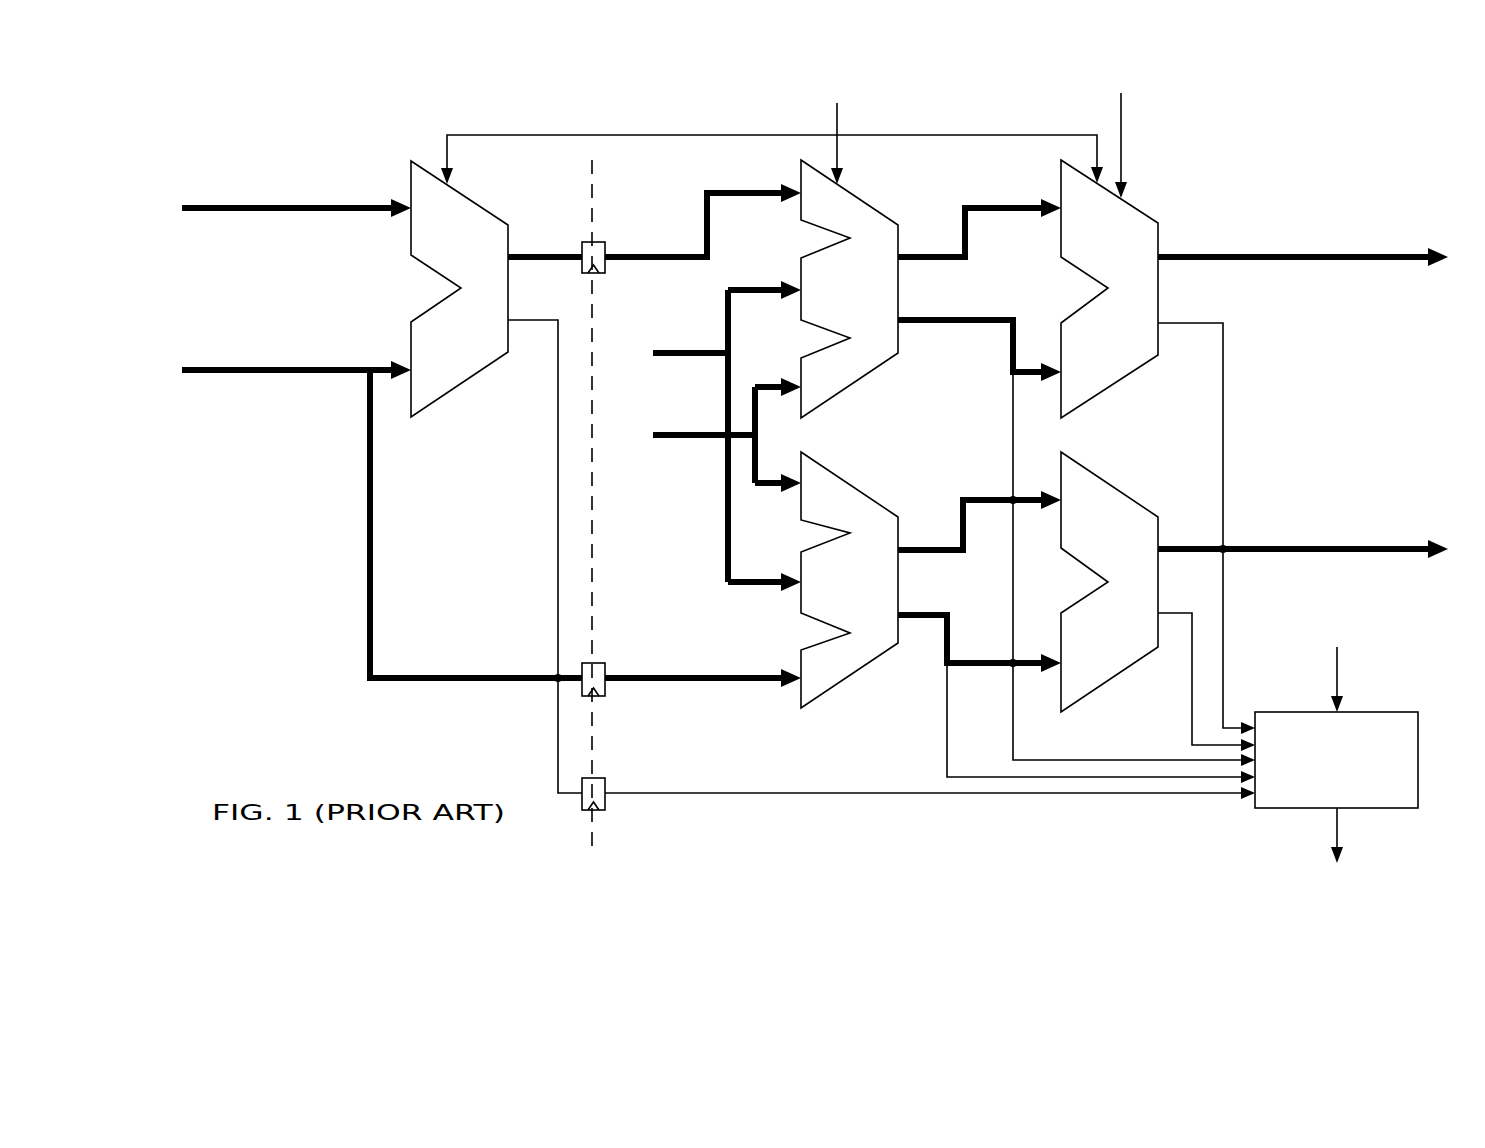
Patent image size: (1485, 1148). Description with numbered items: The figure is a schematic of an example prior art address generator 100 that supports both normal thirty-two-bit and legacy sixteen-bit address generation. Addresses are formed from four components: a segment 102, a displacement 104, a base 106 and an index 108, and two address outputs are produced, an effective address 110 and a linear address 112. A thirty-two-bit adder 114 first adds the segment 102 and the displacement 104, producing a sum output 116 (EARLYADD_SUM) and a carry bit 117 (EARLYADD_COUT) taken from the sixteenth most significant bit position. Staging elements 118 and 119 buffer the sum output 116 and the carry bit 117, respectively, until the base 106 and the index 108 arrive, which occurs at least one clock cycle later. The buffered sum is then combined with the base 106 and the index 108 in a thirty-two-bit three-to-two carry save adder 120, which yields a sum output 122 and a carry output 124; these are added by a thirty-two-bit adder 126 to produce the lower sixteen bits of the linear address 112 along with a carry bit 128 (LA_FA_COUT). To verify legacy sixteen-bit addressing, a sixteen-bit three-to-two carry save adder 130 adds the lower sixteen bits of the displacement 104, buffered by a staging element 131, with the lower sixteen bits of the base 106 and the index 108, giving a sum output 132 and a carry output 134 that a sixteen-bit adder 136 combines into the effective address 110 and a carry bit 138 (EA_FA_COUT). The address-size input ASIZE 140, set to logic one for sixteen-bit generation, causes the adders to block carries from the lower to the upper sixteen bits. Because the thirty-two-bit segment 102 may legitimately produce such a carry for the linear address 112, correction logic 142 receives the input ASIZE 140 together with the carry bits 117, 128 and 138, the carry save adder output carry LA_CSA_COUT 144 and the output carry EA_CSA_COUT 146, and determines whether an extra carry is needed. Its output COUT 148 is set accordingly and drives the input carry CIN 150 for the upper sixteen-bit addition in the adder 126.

The address generator 100 is at (1358, 162).
The segment 102 is at (279, 215).
The displacement 104 is at (472, 528).
The base 106 is at (704, 450).
The index 108 is at (699, 450).
The effective address 110 is at (1305, 556).
The linear address 112 is at (1305, 265).
The 32-bit adder 114 is at (482, 289).
The sum output 116 is at (654, 220).
The carry bit 117 is at (881, 542).
The staging element 118 is at (630, 243).
The staging element 119 is at (631, 779).
The 32-bit 3:2 carry save adder 120 is at (867, 248).
The sum output 122 is at (979, 245).
The carry output 124 is at (979, 337).
The 32-bit adder 126 is at (1137, 289).
The carry bit 128 is at (1206, 513).
The 16-bit 3:2 carry save adder 130 is at (872, 580).
The staging element 131 is at (631, 664).
The sum output 132 is at (979, 536).
The carry output 134 is at (979, 629).
The 16-bit adder 136 is at (1137, 582).
The carry bit 138 is at (1228, 664).
The input ASIZE(16) 140 is at (919, 408).
The correction logic 142 is at (1359, 746).
The output carry bit LA_CSA_COUT(15) 144 is at (1096, 569).
The output carry bit EA_CSA_COUT(15) 146 is at (1064, 723).
The output COUT(15) 148 is at (1332, 861).
The input carry CIN(16) 150 is at (1213, 134).